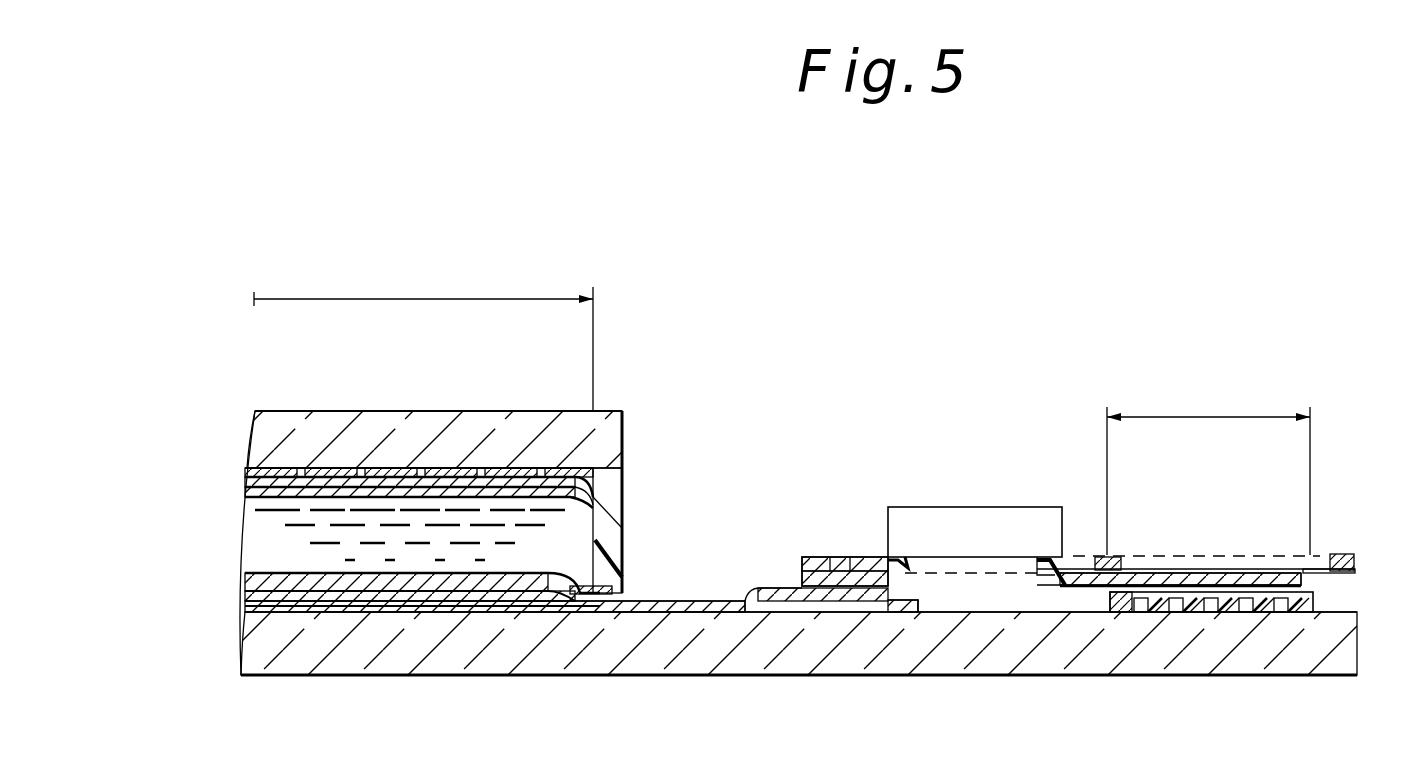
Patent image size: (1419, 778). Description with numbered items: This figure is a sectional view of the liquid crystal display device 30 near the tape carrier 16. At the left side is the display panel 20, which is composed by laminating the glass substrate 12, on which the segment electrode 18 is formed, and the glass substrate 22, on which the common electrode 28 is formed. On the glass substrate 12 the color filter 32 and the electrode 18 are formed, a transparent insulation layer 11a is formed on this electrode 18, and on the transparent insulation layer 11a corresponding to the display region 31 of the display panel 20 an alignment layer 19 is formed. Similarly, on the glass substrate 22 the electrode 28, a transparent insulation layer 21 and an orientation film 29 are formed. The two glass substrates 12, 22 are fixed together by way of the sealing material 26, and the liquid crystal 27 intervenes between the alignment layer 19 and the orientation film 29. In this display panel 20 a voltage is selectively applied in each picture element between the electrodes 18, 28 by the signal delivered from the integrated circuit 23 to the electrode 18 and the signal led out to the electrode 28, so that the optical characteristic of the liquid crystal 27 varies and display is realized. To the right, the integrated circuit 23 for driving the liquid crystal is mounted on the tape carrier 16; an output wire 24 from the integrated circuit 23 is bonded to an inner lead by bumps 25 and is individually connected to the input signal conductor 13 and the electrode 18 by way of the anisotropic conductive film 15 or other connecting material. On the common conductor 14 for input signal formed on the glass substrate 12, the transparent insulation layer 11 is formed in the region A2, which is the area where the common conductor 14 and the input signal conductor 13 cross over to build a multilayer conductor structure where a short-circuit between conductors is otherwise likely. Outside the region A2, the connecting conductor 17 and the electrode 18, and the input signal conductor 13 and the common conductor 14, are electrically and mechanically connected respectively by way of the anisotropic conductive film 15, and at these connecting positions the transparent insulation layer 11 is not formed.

The transparent insulation layer 11 is at (1115, 612).
The transparent insulation layer 11a is at (670, 595).
The glass substrate 12 is at (727, 640).
The input signal conductor 13 is at (1182, 572).
The common conductor for input signal 14 is at (1245, 612).
The anisotropic conductive film 15 is at (775, 590).
The tape carrier 16 is at (830, 566).
The connecting conductor 17 is at (830, 562).
The segment electrode 18 is at (683, 607).
The alignment layer 19 is at (590, 580).
The display panel 20 is at (668, 398).
The transparent insulation layer 21 is at (600, 470).
The glass substrate 22 is at (540, 422).
The integrated circuit 23 is at (992, 525).
The output wire 24 is at (870, 562).
The bumps 25 is at (897, 600).
The sealing material 26 is at (615, 520).
The liquid crystal 27 is at (245, 548).
The common electrode 28 is at (542, 470).
The orientation film 29 is at (600, 490).
The liquid crystal display device 30 is at (957, 378).
The display region 31 is at (423, 299).
The color filter 32 is at (362, 615).
The region A2 is at (1218, 417).